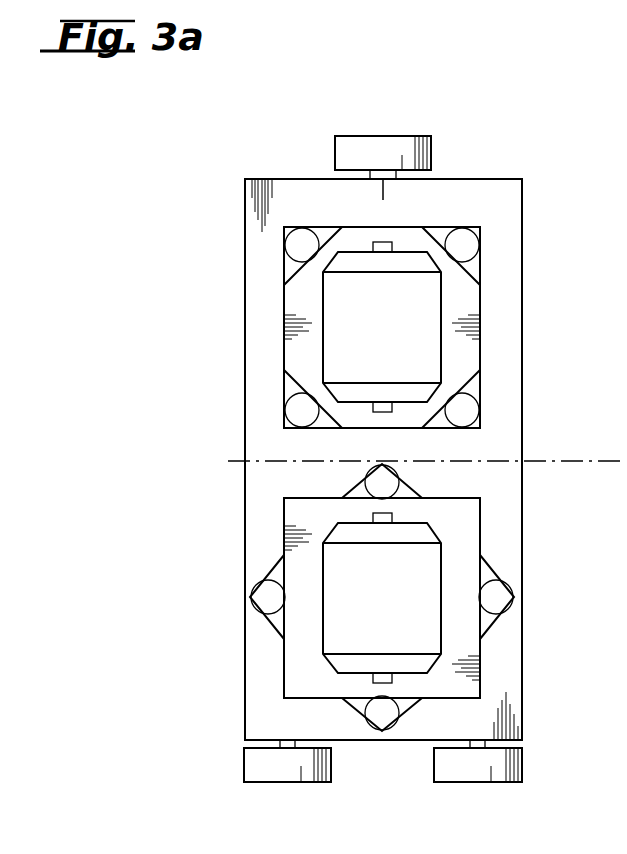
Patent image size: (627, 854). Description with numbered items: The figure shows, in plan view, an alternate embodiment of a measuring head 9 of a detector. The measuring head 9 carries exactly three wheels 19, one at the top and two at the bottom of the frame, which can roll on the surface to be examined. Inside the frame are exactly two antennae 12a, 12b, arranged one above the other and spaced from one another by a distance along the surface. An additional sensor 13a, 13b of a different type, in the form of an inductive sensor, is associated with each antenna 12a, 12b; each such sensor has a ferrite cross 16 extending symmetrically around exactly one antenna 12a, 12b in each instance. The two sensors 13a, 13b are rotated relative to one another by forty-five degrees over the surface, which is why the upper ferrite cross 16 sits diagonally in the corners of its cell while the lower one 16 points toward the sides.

The measuring head 9 is at (296, 150).
The wheels 19 is at (384, 148).
The additional sensor 13a is at (486, 261).
The additional sensor 13b is at (426, 489).
The antenna 12a is at (362, 336).
The antenna 12b is at (362, 608).
The ferrite cross 16 is at (468, 387).